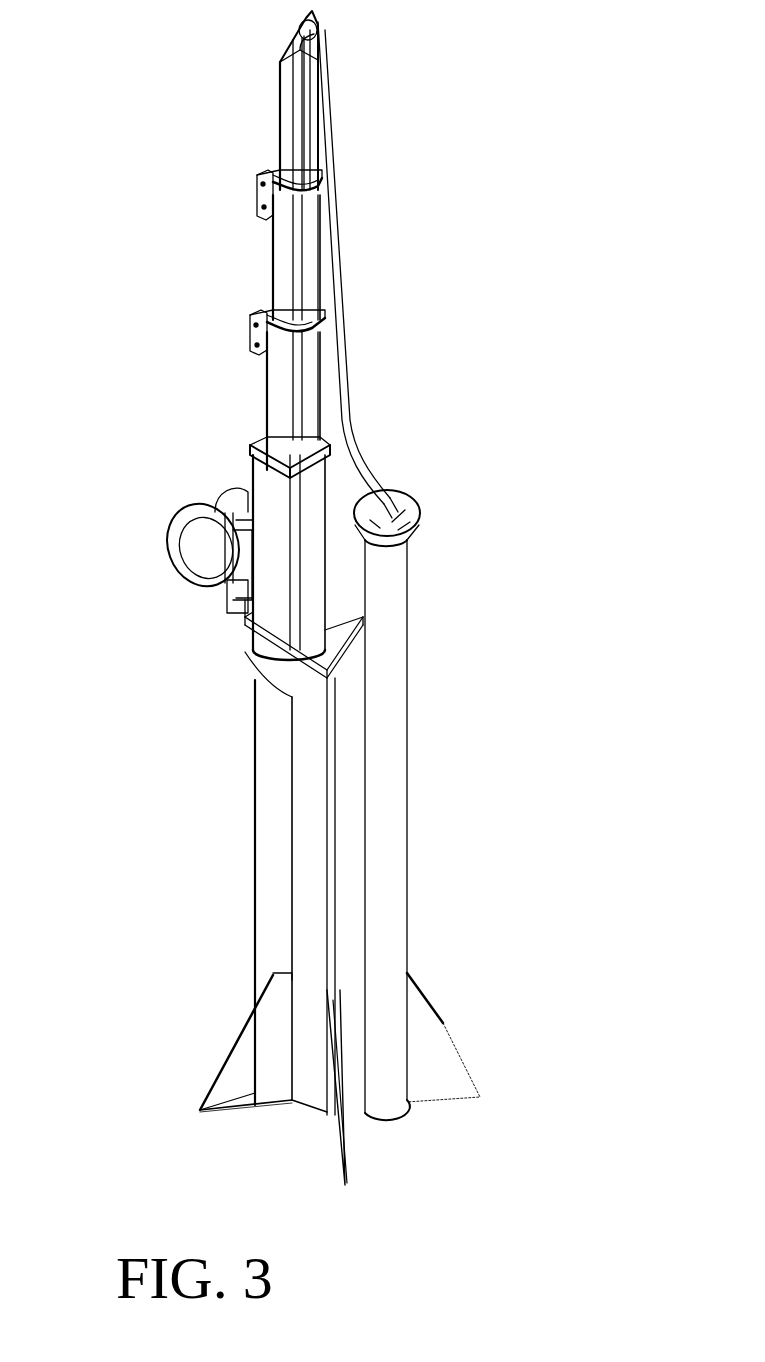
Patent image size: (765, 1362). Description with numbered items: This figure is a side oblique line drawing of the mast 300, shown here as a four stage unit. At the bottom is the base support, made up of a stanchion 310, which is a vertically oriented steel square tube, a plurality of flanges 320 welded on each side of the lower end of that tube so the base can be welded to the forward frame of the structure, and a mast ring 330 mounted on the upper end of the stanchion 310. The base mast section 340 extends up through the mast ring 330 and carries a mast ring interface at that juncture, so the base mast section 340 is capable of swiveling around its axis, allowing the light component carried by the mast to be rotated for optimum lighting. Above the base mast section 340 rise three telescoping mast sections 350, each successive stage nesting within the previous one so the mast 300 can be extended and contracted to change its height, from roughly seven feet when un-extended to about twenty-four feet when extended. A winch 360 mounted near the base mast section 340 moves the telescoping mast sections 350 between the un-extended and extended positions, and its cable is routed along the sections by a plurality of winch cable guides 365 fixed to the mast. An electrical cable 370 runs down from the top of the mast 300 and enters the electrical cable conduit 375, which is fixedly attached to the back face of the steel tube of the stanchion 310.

The mast 300 is at (500, 194).
The stanchion 310 is at (280, 1100).
The flanges 320 is at (440, 1020).
The mast ring 330 is at (246, 661).
The base mast section 340 is at (250, 824).
The telescoping mast sections 350 is at (283, 100).
The winch 360 is at (175, 530).
The winch cable guides 365 is at (262, 180).
The electrical cable 370 is at (354, 356).
The electrical cable conduit 375 is at (415, 690).